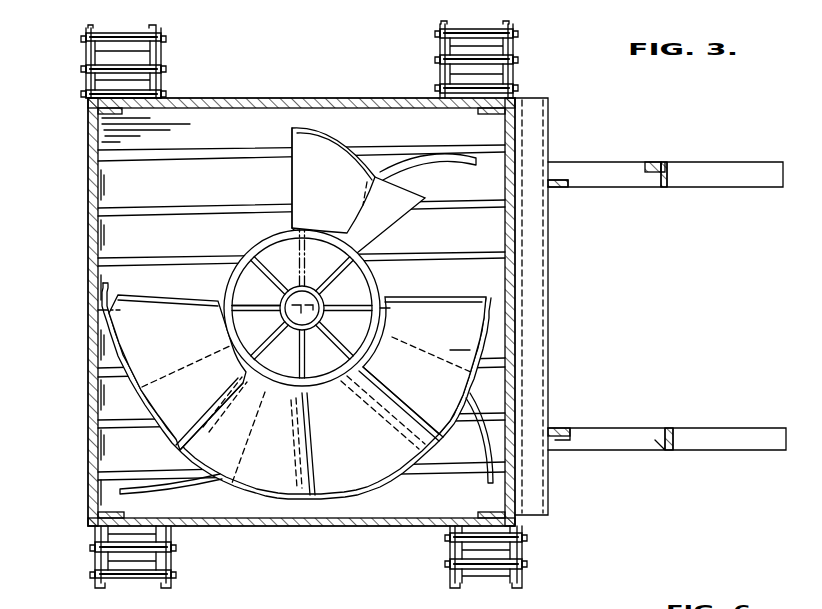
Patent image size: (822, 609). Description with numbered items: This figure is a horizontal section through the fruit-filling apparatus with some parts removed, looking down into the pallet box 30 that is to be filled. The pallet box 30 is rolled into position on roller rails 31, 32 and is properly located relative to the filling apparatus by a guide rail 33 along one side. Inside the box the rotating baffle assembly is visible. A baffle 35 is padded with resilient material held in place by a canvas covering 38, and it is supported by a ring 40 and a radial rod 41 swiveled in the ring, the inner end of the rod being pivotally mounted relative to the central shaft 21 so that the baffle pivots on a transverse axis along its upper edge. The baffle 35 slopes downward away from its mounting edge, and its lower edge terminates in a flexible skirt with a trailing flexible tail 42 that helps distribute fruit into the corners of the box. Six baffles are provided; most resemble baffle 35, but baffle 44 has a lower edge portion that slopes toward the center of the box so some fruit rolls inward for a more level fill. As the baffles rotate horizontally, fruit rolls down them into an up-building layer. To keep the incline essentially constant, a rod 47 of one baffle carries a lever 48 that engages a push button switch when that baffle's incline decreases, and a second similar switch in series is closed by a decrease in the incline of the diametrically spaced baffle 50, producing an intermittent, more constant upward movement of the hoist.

The shaft 21 is at (309, 292).
The pallet box 30 is at (306, 98).
The roller rail 31 is at (131, 580).
The roller rail 32 is at (487, 578).
The guide rail 33 is at (548, 390).
The baffle 35 is at (388, 476).
The canvas covering 38 is at (347, 158).
The ring 40 is at (270, 240).
The radial rod 41 is at (338, 352).
The trailing flexible tail 42 is at (490, 481).
The baffle 44 is at (284, 182).
The rod 47 is at (268, 310).
The lever 48 is at (297, 331).
The baffle 50 is at (469, 337).